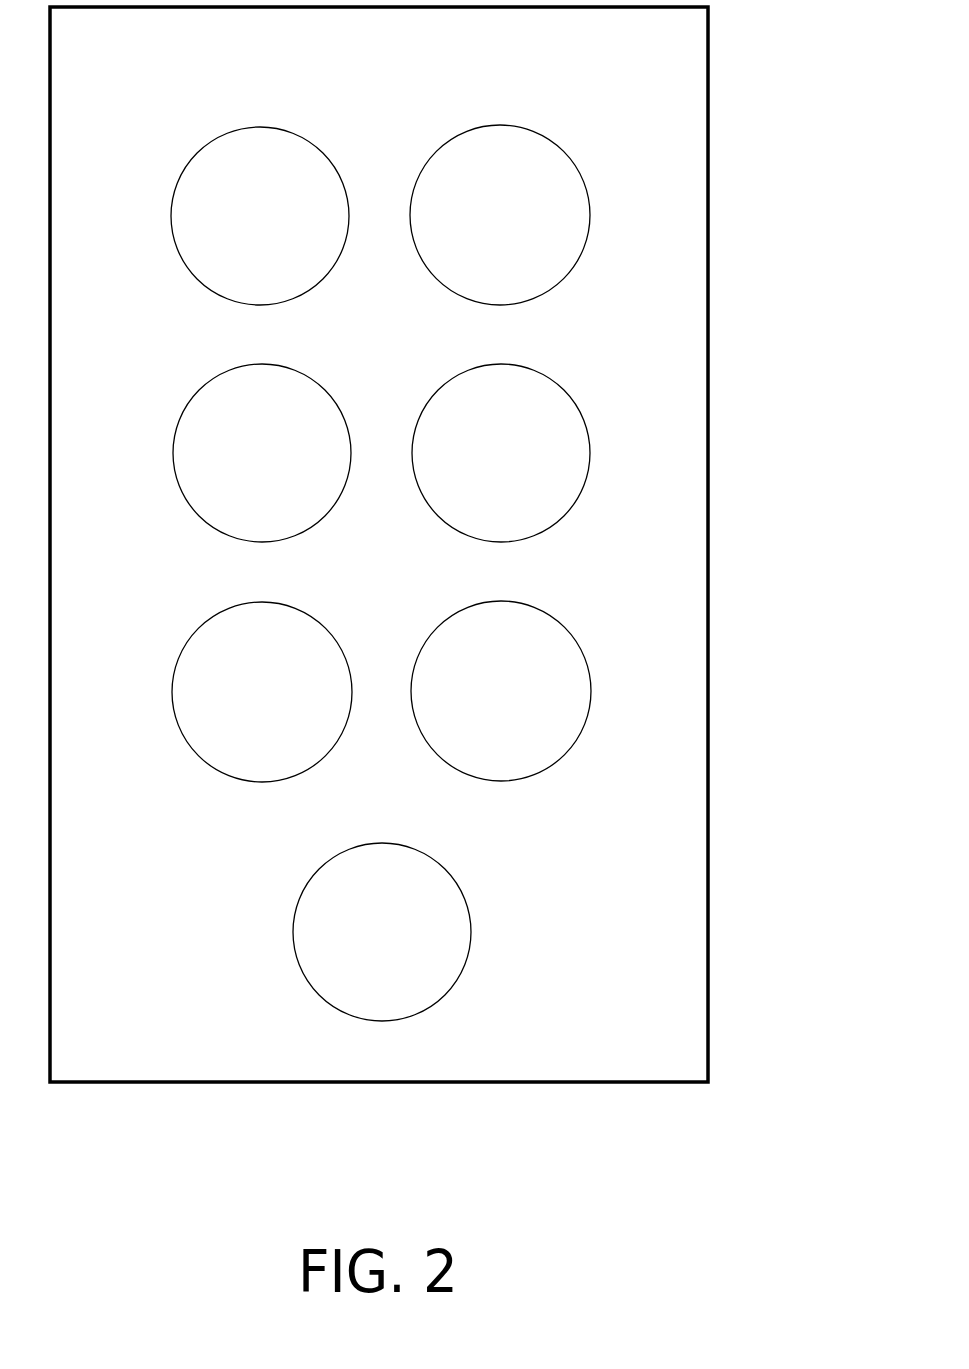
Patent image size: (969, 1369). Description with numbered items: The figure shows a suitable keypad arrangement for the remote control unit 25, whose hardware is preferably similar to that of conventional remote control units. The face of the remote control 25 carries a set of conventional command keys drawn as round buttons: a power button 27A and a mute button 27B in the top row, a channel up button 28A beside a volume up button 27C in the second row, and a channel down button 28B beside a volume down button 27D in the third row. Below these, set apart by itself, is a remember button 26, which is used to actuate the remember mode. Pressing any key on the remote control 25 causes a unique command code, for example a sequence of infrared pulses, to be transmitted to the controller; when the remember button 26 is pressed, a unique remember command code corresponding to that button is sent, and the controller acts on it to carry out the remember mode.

The remote control unit 25 is at (723, 702).
The remember button 26 is at (487, 914).
The power button 27A is at (273, 109).
The mute button 27B is at (513, 109).
The volume up button 27C is at (514, 349).
The volume down button 27D is at (513, 586).
The channel up button 28A is at (275, 349).
The channel down button 28B is at (275, 587).